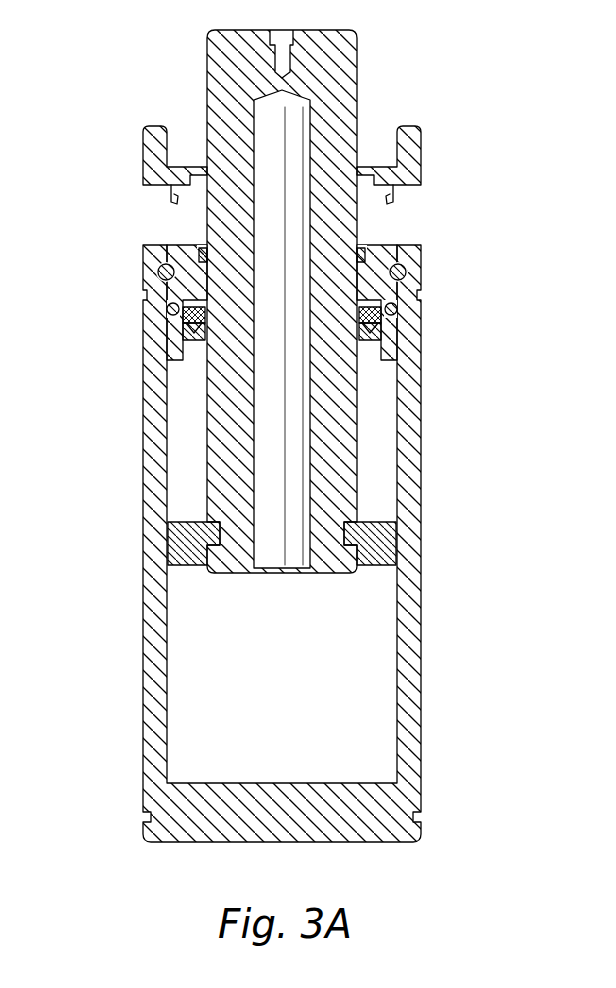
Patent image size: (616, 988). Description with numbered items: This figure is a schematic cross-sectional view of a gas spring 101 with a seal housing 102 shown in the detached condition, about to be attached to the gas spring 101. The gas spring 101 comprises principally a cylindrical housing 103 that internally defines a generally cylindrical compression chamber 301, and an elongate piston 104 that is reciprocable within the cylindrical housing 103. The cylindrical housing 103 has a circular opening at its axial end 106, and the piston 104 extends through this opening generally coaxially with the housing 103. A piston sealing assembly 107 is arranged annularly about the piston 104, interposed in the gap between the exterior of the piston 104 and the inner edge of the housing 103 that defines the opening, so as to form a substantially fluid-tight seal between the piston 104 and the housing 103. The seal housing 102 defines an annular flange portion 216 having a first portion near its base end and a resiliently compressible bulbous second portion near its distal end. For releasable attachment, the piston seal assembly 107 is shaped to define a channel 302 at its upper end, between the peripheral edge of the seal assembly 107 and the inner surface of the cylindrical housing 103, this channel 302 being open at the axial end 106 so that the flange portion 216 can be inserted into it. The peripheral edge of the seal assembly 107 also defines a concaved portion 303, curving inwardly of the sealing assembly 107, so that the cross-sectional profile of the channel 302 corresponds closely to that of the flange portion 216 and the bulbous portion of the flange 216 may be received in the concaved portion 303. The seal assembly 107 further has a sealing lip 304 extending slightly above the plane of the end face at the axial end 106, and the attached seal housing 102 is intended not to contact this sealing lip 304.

The gas spring 101 is at (320, 497).
The seal housing 102 is at (330, 301).
The cylindrical housing 103 is at (413, 592).
The elongate piston 104 is at (347, 99).
The axial end 106 is at (273, 256).
The piston sealing assembly 107 is at (393, 288).
The annular flange portion 216 is at (146, 194).
The compression chamber 301 is at (296, 674).
The channel 302 is at (163, 234).
The concaved portion 303 is at (177, 257).
The sealing lip 304 is at (360, 246).